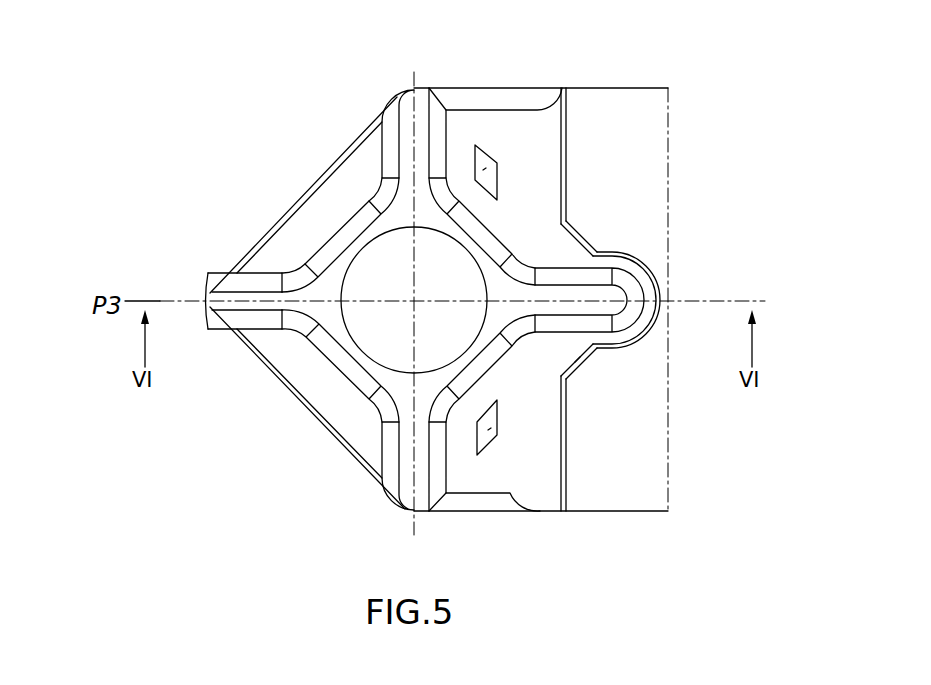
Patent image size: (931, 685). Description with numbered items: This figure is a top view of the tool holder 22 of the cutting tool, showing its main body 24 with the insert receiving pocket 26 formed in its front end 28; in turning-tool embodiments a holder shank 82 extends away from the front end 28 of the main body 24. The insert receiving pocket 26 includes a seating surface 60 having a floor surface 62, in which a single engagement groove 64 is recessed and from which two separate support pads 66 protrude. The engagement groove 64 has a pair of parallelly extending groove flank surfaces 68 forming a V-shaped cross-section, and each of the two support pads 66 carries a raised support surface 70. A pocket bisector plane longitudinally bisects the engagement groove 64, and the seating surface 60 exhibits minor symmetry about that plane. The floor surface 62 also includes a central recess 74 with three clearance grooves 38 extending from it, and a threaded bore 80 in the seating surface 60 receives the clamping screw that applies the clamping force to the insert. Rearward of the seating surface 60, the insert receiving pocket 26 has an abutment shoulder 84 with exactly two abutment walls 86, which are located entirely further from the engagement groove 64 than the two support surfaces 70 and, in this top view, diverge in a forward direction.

The tool holder 22 is at (646, 72).
The main body 24 is at (610, 136).
The insert receiving pocket 26 is at (550, 130).
The front end 28 is at (264, 392).
The clearance grooves 38 is at (588, 286).
The seating surface 60 is at (343, 220).
The floor surface 62 is at (273, 225).
The engagement groove 64 is at (255, 278).
The support pads 66 is at (484, 140).
The groove flank surfaces 68 is at (221, 272).
The support surface 70 is at (483, 170).
The central recess 74 is at (384, 405).
The threaded bore 80 is at (394, 238).
The holder shank 82 is at (645, 174).
The abutment shoulder 84 is at (605, 375).
The abutment walls 86 is at (579, 242).